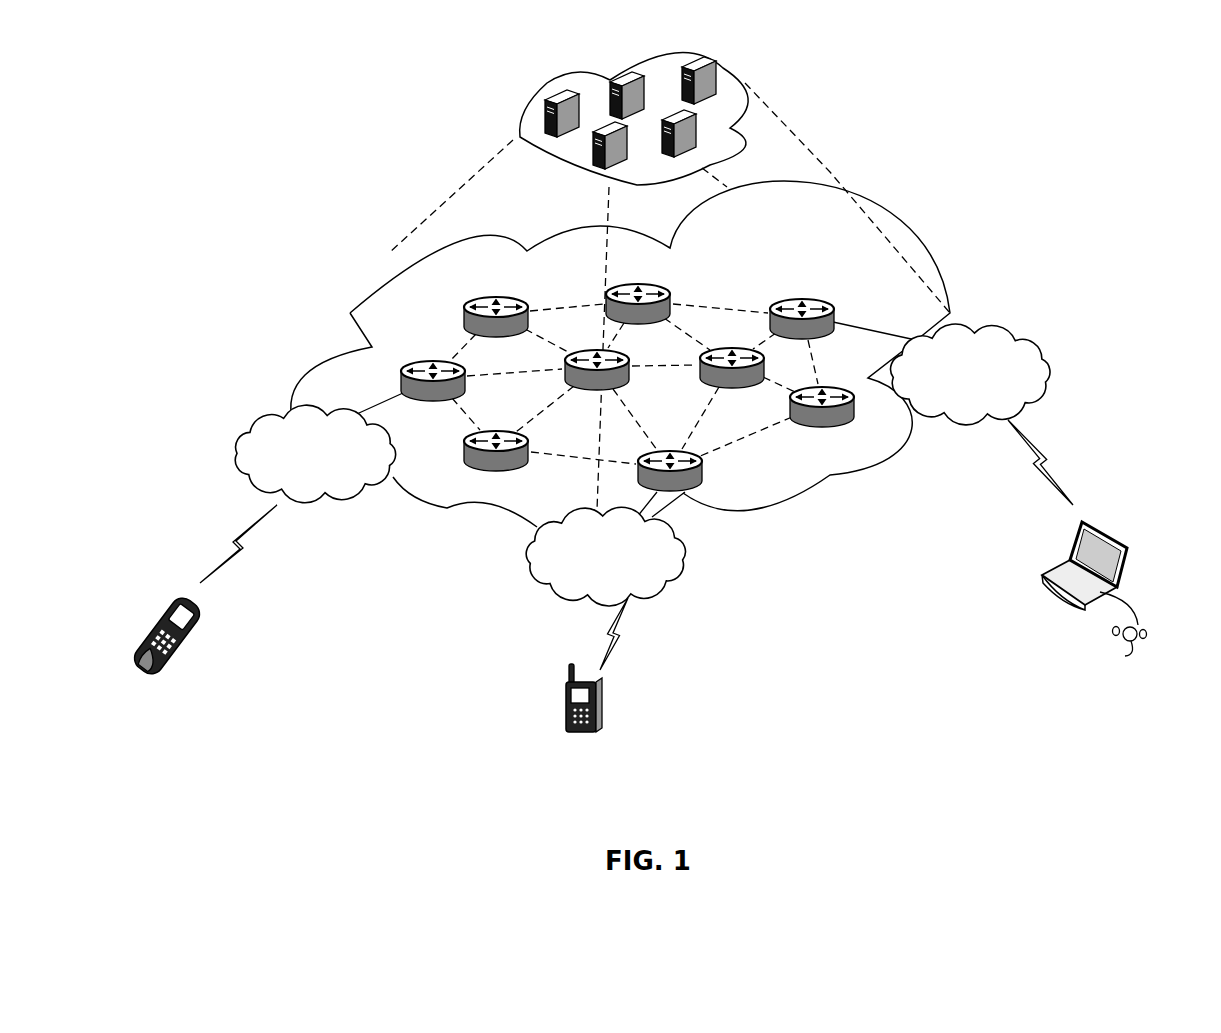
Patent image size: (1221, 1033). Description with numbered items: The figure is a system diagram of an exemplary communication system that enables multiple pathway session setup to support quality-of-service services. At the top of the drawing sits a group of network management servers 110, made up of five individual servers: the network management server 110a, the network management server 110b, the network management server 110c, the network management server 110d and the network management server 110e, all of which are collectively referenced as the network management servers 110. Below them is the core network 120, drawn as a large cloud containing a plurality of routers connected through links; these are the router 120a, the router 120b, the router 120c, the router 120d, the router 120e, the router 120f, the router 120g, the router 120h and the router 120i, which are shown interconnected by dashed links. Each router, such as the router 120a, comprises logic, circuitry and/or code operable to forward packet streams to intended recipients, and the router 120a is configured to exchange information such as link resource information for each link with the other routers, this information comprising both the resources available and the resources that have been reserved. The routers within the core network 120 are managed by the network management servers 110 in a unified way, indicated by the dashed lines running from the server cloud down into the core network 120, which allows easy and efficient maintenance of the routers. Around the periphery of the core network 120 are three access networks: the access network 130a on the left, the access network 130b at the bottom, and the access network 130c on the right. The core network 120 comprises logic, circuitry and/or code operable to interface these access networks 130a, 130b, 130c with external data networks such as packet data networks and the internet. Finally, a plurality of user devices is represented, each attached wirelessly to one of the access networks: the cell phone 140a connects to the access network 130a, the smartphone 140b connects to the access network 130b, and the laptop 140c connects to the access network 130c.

The network management servers 110 is at (557, 81).
The network management server 110a is at (595, 165).
The network management server 110b is at (546, 120).
The network management server 110c is at (613, 73).
The network management server 110d is at (714, 75).
The network management server 110e is at (693, 141).
The core network 120 is at (832, 186).
The router 120a is at (475, 304).
The router 120b is at (612, 285).
The router 120c is at (797, 299).
The router 120d is at (410, 363).
The router 120e is at (577, 349).
The router 120f is at (725, 349).
The router 120g is at (831, 383).
The router 120h is at (477, 473).
The router 120i is at (684, 489).
The access network 130a is at (240, 432).
The access network 130b is at (687, 573).
The access network 130c is at (1024, 343).
The cell phone 140a is at (185, 670).
The smartphone 140b is at (601, 730).
The laptop 140c is at (1127, 548).